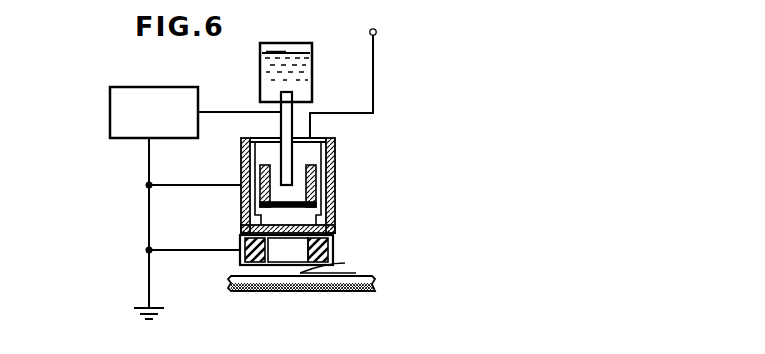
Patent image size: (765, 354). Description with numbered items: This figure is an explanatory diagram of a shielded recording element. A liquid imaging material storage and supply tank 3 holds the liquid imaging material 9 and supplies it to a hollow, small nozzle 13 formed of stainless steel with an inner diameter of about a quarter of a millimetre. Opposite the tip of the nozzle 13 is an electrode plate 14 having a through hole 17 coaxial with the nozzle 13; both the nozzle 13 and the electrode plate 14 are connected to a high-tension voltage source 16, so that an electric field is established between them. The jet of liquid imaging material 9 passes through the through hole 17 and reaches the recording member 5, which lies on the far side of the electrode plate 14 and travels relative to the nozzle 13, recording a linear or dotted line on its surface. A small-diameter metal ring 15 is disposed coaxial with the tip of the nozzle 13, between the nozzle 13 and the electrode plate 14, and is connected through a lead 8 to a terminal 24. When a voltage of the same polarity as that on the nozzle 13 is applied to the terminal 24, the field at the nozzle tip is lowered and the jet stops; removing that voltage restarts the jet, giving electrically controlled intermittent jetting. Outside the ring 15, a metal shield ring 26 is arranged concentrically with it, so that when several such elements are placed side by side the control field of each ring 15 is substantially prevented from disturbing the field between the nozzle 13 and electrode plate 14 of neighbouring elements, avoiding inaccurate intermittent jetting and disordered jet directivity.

The liquid imaging material storage and supply tank 3 is at (260, 63).
The recording member 5 is at (375, 284).
The lead 8 is at (375, 70).
The liquid imaging material 9 is at (277, 52).
The nozzle 13 is at (281, 122).
The electrode plate 14 is at (333, 249).
The ring 15 is at (316, 185).
The high-tension voltage source 16 is at (107, 103).
The through hole 17 is at (345, 263).
The terminal 24 is at (387, 36).
The shield ring 26 is at (336, 150).